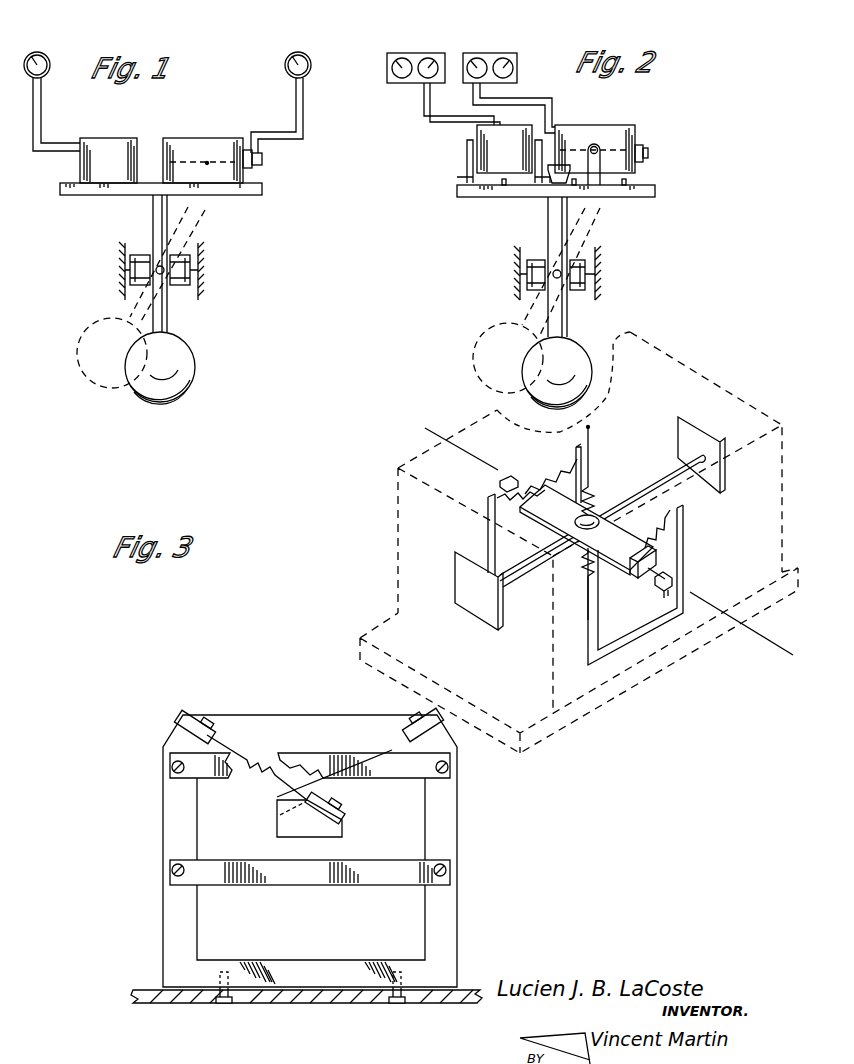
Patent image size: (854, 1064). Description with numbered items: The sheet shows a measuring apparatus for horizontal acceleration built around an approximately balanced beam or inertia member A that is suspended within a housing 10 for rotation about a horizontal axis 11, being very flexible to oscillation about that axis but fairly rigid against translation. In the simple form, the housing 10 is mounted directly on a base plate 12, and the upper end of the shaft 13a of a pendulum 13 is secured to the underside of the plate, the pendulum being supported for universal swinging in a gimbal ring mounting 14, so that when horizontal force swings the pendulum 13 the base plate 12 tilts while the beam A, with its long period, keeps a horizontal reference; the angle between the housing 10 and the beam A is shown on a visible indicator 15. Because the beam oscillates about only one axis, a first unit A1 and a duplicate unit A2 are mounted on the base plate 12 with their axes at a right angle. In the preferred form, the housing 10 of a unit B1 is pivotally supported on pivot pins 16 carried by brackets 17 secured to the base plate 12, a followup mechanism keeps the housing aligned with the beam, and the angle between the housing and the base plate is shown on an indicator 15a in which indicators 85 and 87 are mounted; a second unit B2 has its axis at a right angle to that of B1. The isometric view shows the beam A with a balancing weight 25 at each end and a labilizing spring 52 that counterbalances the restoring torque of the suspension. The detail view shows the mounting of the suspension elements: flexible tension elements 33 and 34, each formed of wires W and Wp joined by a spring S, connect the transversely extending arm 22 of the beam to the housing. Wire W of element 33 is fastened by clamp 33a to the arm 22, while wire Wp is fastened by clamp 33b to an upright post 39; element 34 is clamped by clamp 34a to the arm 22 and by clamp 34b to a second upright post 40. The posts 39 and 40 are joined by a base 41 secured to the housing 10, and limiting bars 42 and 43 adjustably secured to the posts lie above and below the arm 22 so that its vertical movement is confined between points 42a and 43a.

In FIG. 1, the housing 10 is at (196, 137).
In FIG. 2, the housing 10 is at (565, 136).
In FIG. 3, the housing 10 is at (743, 402).
In FIG. 5, the housing 10 is at (165, 1001).
In FIG. 1, the horizontal axis 11 is at (207, 163).
In FIG. 3, the horizontal axis 11 is at (755, 636).
In FIG. 1, the base plate 12 is at (257, 195).
In FIG. 2, the base plate 12 is at (657, 195).
In FIG. 3, the base plate 12 is at (375, 630).
In FIG. 1, the pendulum 13 is at (190, 360).
In FIG. 2, the pendulum 13 is at (580, 340).
In FIG. 1, the pendulum shaft 13a is at (165, 316).
In FIG. 2, the pendulum shaft 13a is at (550, 215).
In FIG. 1, the pivot bearing 14 is at (208, 266).
In FIG. 2, the pivot bearing 14 is at (606, 266).
In FIG. 1, the visible indicator 15 is at (306, 52).
In FIG. 2, the indicator 15a is at (461, 68).
In FIG. 2, the pivot pins 16 is at (595, 143).
In FIG. 2, the brackets 17 is at (637, 174).
In FIG. 5, the transversely extending arm 22 is at (302, 821).
In FIG. 3, the balancing weight 25 is at (455, 572).
In FIG. 5, the flexible tension element 33 is at (240, 729).
In FIG. 5, the clamp 33a is at (343, 808).
In FIG. 5, the clamp 33b is at (190, 712).
In FIG. 5, the flexible tension element 34 is at (360, 750).
In FIG. 5, the clamp 34a is at (277, 810).
In FIG. 5, the clamp 34b is at (407, 727).
In FIG. 5, the upright post 39 is at (163, 813).
In FIG. 5, the second upright post 40 is at (448, 833).
In FIG. 5, the base 41 is at (310, 960).
In FIG. 5, the limiting bar 42 is at (310, 772).
In FIG. 5, the limiting point 42a is at (323, 780).
In FIG. 5, the limiting bar 43 is at (310, 880).
In FIG. 5, the limiting point 43a is at (307, 861).
In FIG. 3, the labilizing spring 52 is at (590, 515).
In FIG. 2, the indicator 85 is at (402, 58).
In FIG. 2, the indicator 87 is at (428, 58).
In FIG. 1, the balanced beam A is at (230, 160).
In FIG. 3, the balanced beam A is at (645, 488).
In FIG. 1, the first unit A1 is at (190, 137).
In FIG. 1, the second unit A2 is at (95, 145).
In FIG. 2, the unit B1 is at (637, 132).
In FIG. 2, the second unit B2 is at (477, 132).
In FIG. 3, the spring S is at (652, 536).
In FIG. 5, the spring S is at (263, 757).
In FIG. 3, the wire W is at (555, 480).
In FIG. 5, the wire W is at (287, 783).
In FIG. 5, the wire Wp is at (227, 738).